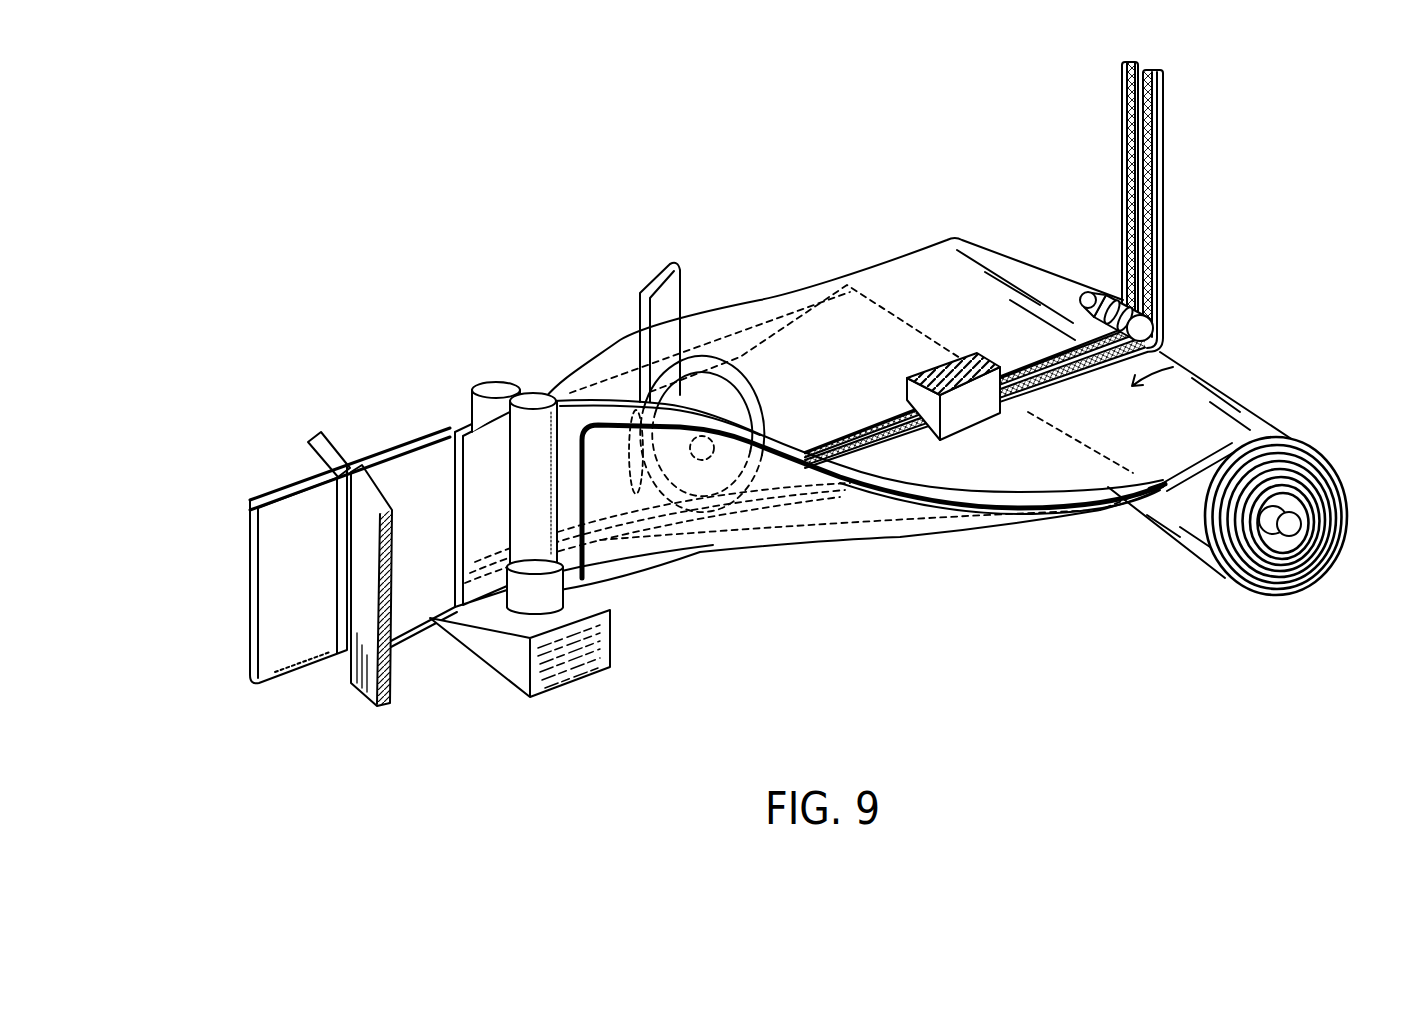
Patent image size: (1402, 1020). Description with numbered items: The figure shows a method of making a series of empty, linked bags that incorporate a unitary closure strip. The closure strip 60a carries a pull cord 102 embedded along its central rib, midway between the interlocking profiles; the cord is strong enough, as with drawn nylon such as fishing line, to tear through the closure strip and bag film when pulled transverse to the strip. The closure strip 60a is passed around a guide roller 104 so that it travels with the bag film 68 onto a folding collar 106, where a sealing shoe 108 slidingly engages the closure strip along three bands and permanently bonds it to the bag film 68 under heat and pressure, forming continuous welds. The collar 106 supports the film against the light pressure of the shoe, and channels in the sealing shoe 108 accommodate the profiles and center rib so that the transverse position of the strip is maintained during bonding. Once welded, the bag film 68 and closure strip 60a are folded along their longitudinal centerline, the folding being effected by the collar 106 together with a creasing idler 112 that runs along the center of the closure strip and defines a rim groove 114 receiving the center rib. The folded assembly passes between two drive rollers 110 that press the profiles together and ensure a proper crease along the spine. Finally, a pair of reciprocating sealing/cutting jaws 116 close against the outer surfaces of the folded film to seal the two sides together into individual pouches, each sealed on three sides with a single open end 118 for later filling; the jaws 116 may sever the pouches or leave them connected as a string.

The closure strip 60a is at (1163, 118).
The bag film 68 is at (1208, 575).
The pull cord 102 is at (1123, 118).
The guide roller 104 is at (1100, 290).
The folding collar 106 is at (1000, 530).
The sealing shoe 108 is at (950, 437).
The drive rollers 110 is at (533, 400).
The creasing idler 112 is at (733, 400).
The rim groove 114 is at (641, 338).
The sealing/cutting jaws 116 is at (317, 436).
The open end 118 is at (282, 490).